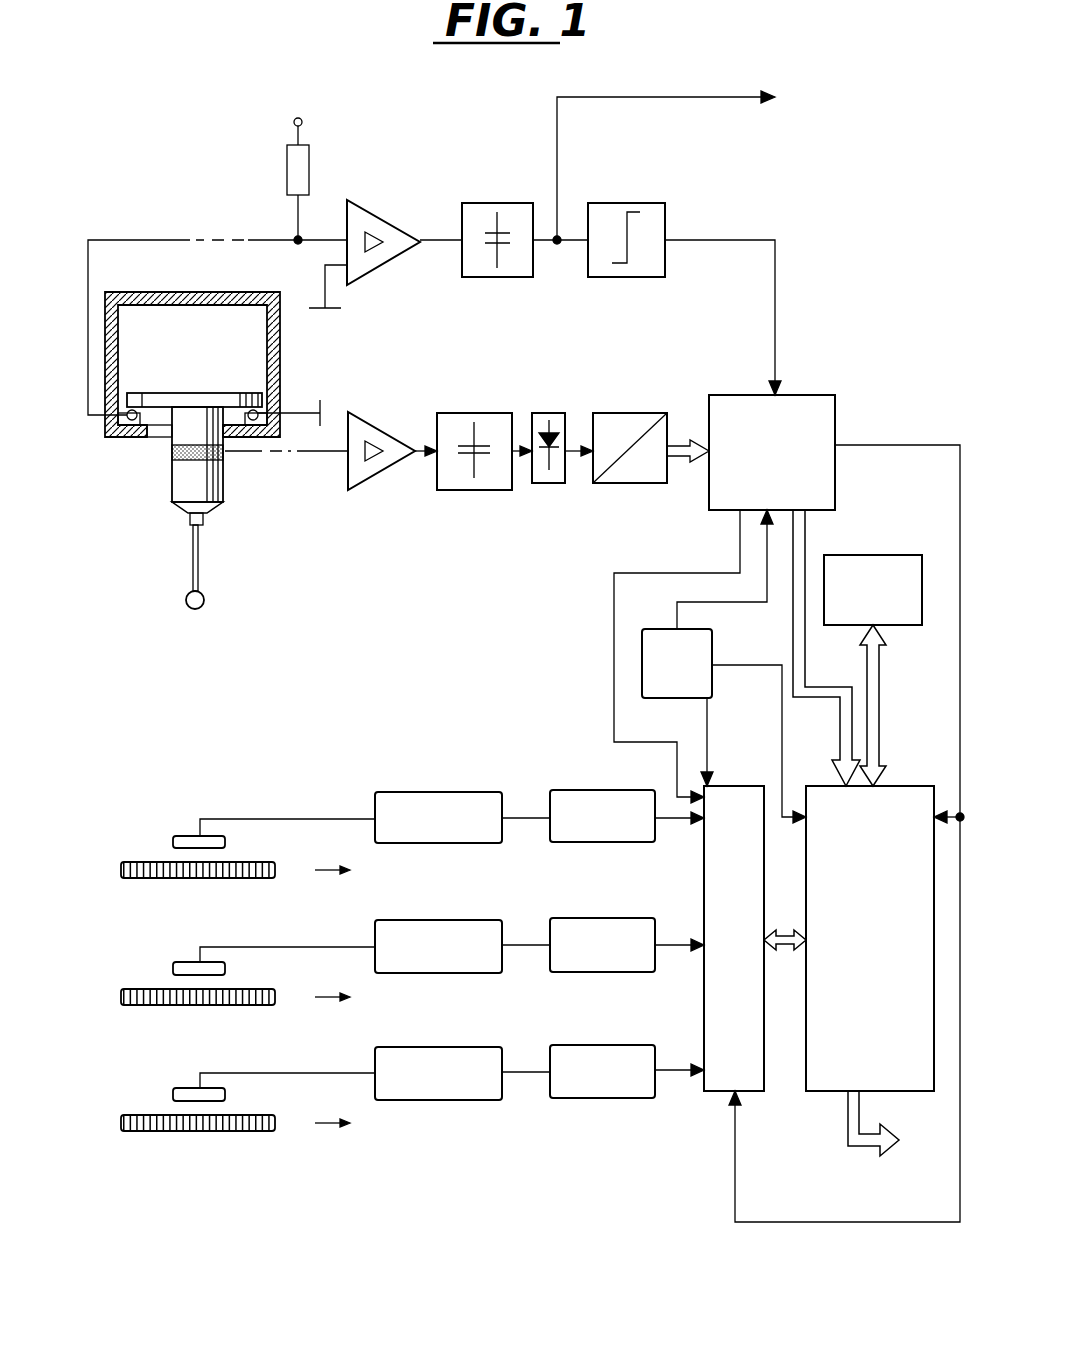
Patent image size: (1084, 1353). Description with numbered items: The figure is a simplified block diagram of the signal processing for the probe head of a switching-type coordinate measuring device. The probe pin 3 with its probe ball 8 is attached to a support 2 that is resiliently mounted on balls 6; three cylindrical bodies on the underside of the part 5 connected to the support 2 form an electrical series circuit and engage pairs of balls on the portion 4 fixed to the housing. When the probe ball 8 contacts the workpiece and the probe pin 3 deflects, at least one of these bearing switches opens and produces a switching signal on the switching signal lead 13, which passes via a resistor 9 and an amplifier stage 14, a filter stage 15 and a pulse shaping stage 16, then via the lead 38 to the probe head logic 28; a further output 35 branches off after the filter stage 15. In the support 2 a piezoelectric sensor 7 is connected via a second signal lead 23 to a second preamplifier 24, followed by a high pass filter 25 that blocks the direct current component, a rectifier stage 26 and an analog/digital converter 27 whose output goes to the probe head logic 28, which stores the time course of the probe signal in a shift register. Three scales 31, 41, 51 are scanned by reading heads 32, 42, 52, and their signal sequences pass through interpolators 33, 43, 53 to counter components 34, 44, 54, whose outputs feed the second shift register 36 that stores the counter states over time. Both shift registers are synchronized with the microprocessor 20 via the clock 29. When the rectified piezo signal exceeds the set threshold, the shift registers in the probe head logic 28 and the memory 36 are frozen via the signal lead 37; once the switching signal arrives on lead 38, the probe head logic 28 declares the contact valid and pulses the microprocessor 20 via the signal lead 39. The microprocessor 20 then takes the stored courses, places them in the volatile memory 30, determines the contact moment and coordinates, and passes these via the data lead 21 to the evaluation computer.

The support 2 is at (185, 492).
The probe pin 3 is at (198, 556).
The portion fixed to the housing 4 is at (282, 345).
The part connected to the support 5 is at (178, 393).
The balls 6 is at (137, 430).
The piezoelectric sensor 7 is at (212, 456).
The probe ball 8 is at (201, 609).
The resistor 9 is at (306, 172).
The switching signal lead 13 is at (148, 240).
The amplifier stage 14 is at (374, 278).
The filter stage 15 is at (490, 266).
The pulse shaping stage 16 is at (632, 280).
The microprocessor 20 is at (822, 1069).
The data lead 21 is at (862, 1150).
The second signal lead 23 is at (325, 455).
The second preamplifier 24 is at (378, 462).
The high pass filter 25 is at (490, 481).
The rectifier stage 26 is at (560, 479).
The analog/digital converter 27 is at (620, 484).
The probe head logic 28 is at (835, 487).
The clock 29 is at (712, 691).
The volatile memory 30 is at (880, 557).
The scale 31 is at (140, 860).
The reading head 32 is at (190, 836).
The interpolator 33 is at (420, 798).
The counter component 34 is at (556, 792).
The output line 35 is at (690, 97).
The second shift register 36 is at (718, 1095).
The signal lead 37 is at (614, 678).
The lead 38 is at (775, 310).
The signal lead 39 is at (960, 683).
The scale 41 is at (140, 988).
The reading head 42 is at (183, 962).
The interpolator 43 is at (408, 935).
The counter component 44 is at (580, 925).
The scale 51 is at (142, 1113).
The reading head 52 is at (183, 1088).
The interpolator 53 is at (405, 1057).
The counter component 54 is at (588, 1053).